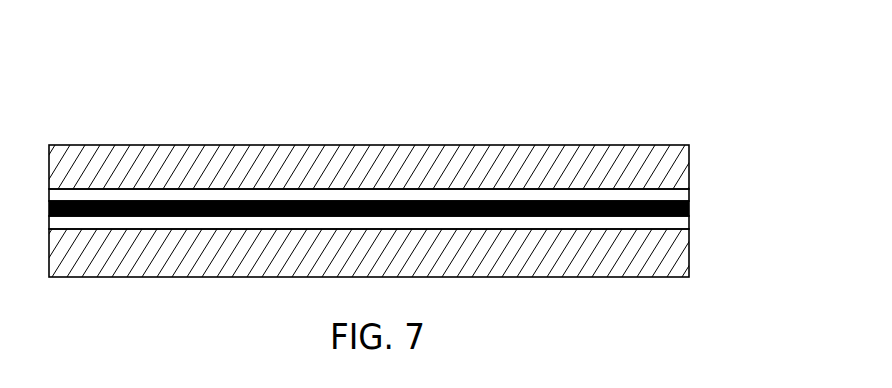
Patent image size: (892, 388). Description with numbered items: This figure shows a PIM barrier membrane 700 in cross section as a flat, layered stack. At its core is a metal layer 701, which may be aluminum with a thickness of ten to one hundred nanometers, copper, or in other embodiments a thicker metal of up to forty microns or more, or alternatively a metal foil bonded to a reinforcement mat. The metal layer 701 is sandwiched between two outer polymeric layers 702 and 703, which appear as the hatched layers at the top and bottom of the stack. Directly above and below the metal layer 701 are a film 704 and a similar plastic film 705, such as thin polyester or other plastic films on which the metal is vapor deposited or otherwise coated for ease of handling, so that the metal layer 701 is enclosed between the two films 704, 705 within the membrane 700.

The PIM barrier membrane 700 is at (422, 175).
The metal layer 701 is at (685, 206).
The polymeric layer 702 is at (682, 157).
The polymeric layer 703 is at (683, 268).
The film 704 is at (683, 195).
The plastic film 705 is at (683, 223).